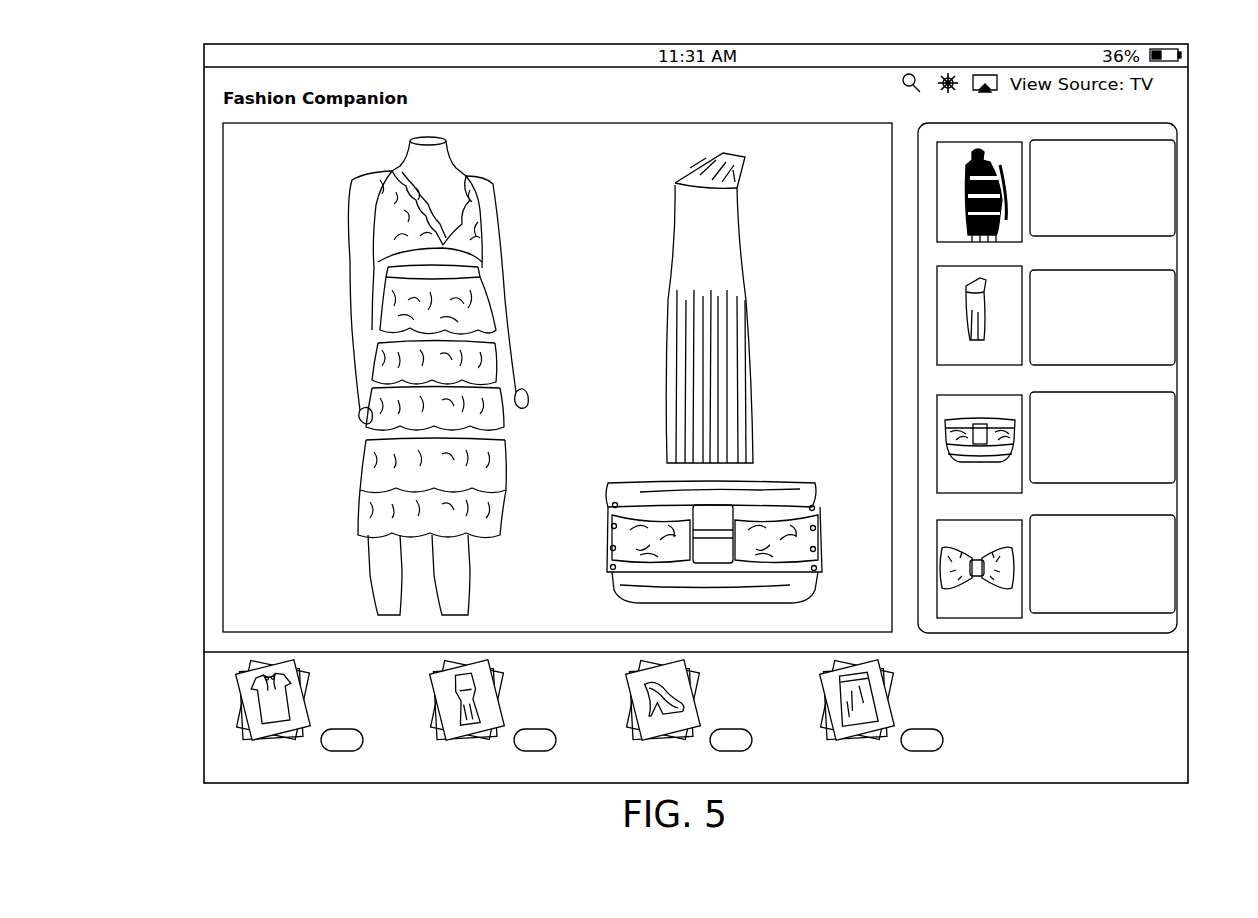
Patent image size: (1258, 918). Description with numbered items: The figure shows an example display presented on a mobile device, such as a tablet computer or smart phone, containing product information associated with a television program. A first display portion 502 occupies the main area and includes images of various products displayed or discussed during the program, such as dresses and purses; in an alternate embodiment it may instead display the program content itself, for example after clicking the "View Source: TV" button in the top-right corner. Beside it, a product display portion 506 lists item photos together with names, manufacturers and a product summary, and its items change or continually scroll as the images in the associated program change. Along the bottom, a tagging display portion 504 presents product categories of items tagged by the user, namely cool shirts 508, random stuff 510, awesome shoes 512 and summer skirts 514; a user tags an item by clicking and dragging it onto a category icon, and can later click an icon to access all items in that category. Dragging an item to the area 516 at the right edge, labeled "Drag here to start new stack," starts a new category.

The first display portion 502 is at (280, 217).
The tagging display portion 504 is at (222, 698).
The product display portion 506 is at (1142, 130).
The cool shirts 508 is at (243, 725).
The random stuff 510 is at (450, 717).
The awesome shoes 512 is at (633, 725).
The summer skirts 514 is at (830, 735).
The area labeled "Drag here to start new stack" 516 is at (1063, 738).